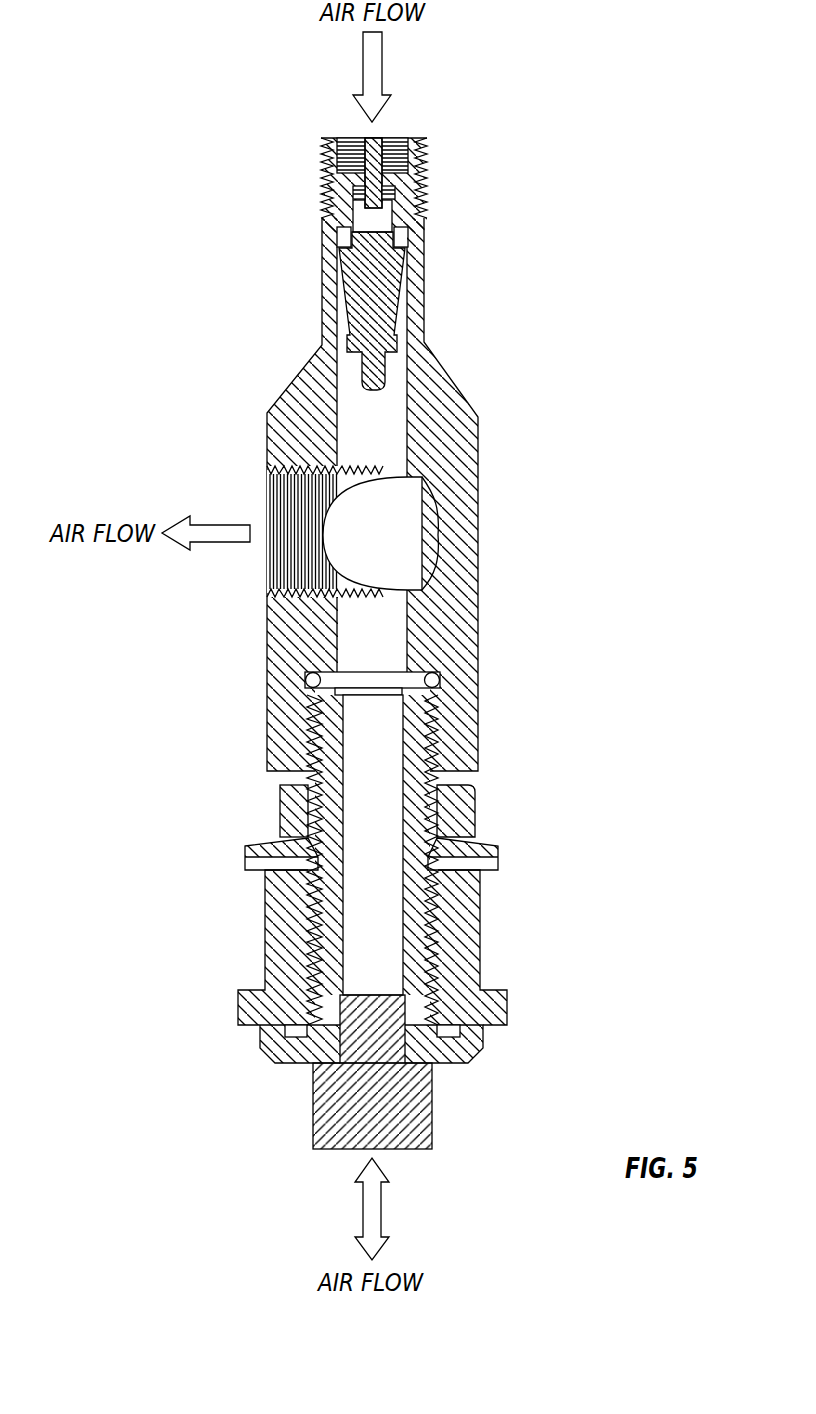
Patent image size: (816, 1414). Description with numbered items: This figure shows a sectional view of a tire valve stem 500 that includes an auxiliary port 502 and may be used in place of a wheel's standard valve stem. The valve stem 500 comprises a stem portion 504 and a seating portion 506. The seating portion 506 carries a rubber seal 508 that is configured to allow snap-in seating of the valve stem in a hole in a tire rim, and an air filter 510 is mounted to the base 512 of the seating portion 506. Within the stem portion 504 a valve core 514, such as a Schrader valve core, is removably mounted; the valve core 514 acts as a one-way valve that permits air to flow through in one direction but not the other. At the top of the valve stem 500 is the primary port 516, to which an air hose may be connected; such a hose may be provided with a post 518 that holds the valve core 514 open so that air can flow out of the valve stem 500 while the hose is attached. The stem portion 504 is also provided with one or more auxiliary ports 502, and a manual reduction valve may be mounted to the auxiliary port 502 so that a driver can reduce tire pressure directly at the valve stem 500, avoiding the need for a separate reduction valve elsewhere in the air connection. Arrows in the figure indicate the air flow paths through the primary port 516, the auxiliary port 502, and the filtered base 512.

The valve stem 500 is at (602, 312).
The auxiliary port 502 is at (268, 570).
The stem portion 504 is at (268, 742).
The seating portion 506 is at (483, 1050).
The rubber seal 508 is at (480, 942).
The air filter 510 is at (432, 1105).
The base 512 is at (298, 1063).
The valve core 514 is at (372, 290).
The primary port 516 is at (347, 137).
The post 518 is at (380, 163).